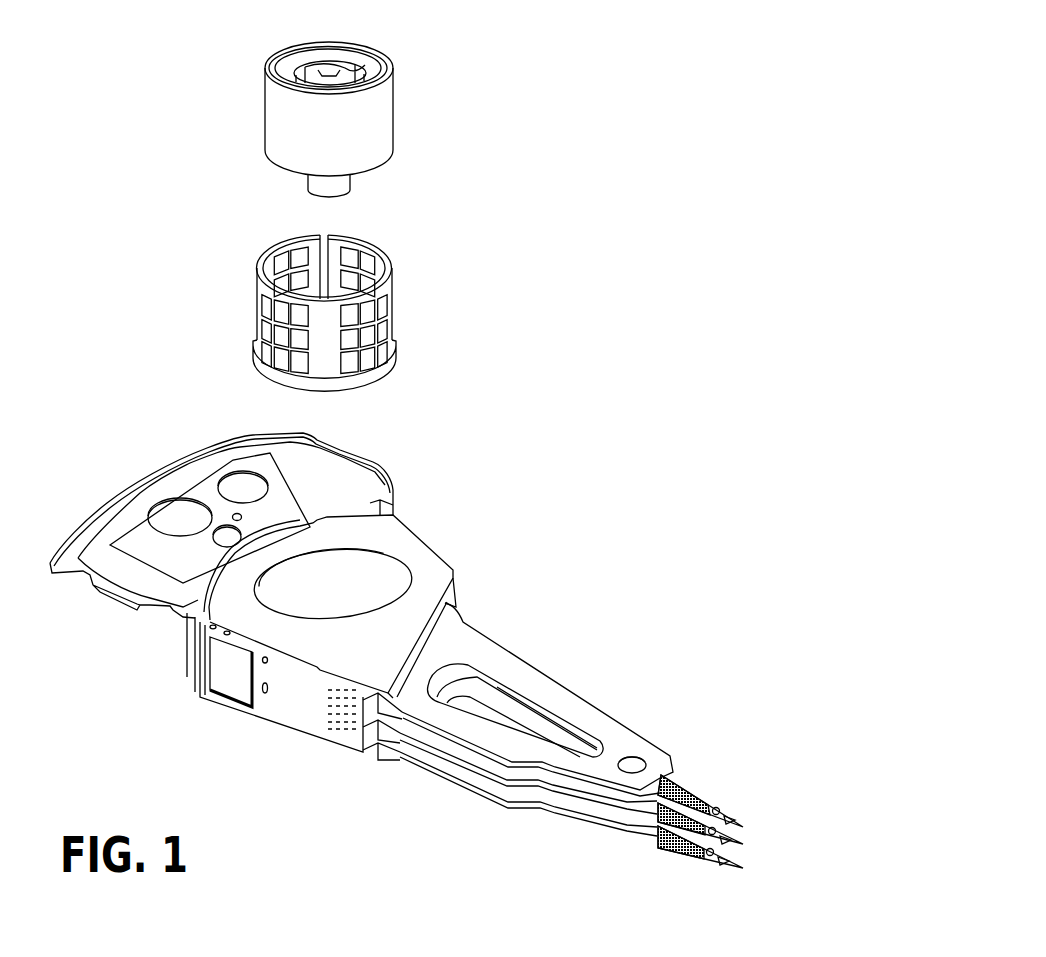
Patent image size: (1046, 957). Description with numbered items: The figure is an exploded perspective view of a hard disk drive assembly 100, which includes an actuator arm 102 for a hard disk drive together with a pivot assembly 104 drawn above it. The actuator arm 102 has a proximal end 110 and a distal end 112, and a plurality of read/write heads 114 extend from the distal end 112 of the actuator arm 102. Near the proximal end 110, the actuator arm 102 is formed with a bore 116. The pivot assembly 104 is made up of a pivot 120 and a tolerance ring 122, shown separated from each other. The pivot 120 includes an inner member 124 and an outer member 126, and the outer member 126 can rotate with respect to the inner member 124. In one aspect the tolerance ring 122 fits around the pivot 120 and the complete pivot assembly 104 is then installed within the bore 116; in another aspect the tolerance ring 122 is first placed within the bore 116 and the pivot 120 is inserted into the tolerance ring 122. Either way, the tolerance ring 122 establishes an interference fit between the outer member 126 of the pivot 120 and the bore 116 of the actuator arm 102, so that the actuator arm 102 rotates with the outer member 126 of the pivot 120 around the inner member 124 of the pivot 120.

The hard disk drive assembly 100 is at (607, 157).
The actuator arm 102 is at (380, 522).
The pivot assembly 104 is at (248, 32).
The proximal end 110 is at (203, 595).
The distal end 112 is at (620, 790).
The read/write heads 114 is at (693, 847).
The bore 116 is at (368, 568).
The pivot 120 is at (393, 145).
The tolerance ring 122 is at (363, 312).
The inner member 124 is at (330, 65).
The outer member 126 is at (357, 112).